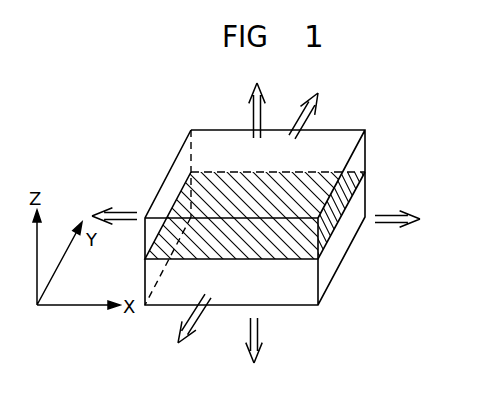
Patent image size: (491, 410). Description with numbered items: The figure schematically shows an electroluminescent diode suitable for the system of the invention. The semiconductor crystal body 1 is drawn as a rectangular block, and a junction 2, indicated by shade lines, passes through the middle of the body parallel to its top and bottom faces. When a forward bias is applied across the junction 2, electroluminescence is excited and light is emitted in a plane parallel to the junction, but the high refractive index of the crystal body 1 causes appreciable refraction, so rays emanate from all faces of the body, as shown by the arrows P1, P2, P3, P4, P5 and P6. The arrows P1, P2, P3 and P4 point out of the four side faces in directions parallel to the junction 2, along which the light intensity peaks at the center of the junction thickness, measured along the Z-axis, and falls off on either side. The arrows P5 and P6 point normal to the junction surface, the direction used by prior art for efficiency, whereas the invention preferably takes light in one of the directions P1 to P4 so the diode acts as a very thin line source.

The electroluminescent diode body 1 is at (367, 142).
The junction 2 is at (250, 208).
The arrow P1 is at (188, 336).
The arrow P2 is at (411, 225).
The arrow P3 is at (313, 104).
The arrow P4 is at (107, 209).
The arrow P5 is at (259, 97).
The arrow P6 is at (253, 358).